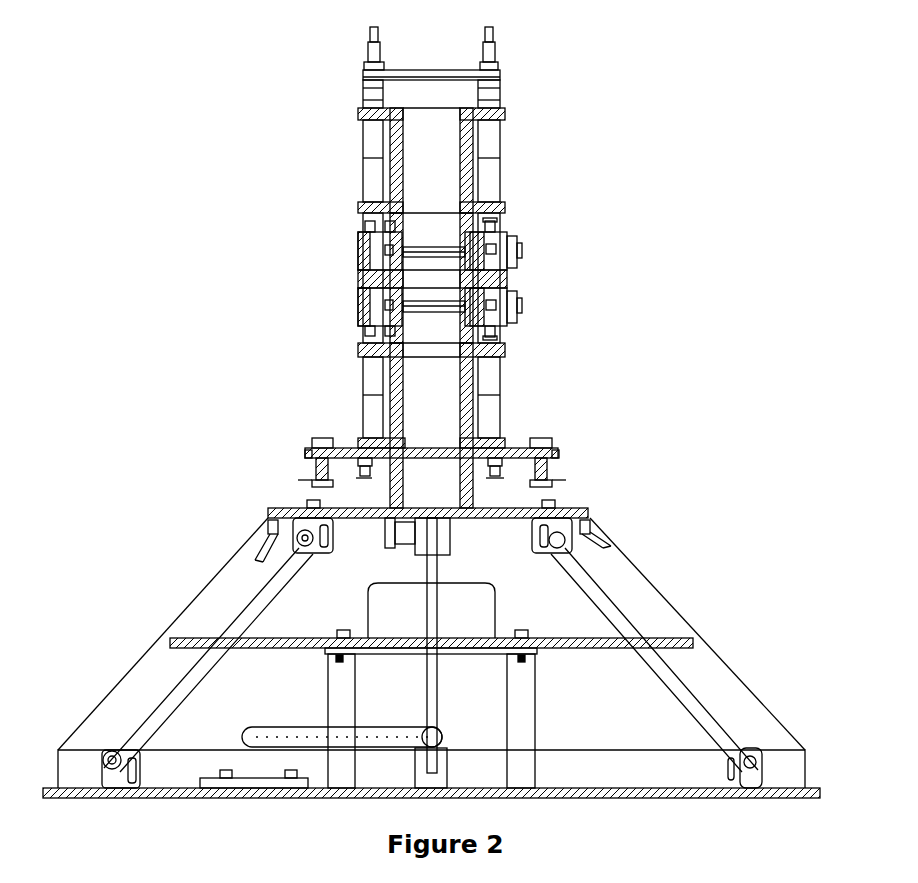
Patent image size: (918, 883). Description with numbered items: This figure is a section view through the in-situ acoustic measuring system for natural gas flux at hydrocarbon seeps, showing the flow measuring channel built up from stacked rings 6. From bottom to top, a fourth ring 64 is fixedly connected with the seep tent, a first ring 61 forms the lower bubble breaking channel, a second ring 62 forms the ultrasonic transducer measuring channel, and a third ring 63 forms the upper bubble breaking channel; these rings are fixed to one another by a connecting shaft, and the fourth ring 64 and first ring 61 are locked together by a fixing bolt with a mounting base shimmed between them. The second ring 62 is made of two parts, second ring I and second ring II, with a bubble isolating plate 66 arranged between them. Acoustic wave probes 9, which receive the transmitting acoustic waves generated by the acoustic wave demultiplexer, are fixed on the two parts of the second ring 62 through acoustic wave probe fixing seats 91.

The rings 6 is at (243, 212).
The first ring 61 is at (390, 382).
The second ring 62 is at (365, 236).
The third ring 63 is at (390, 145).
The fourth ring 64 is at (315, 442).
The bubble isolating plate 66 is at (505, 278).
The acoustic wave probes 9 is at (498, 228).
The acoustic wave probe fixing seats 91 is at (500, 326).